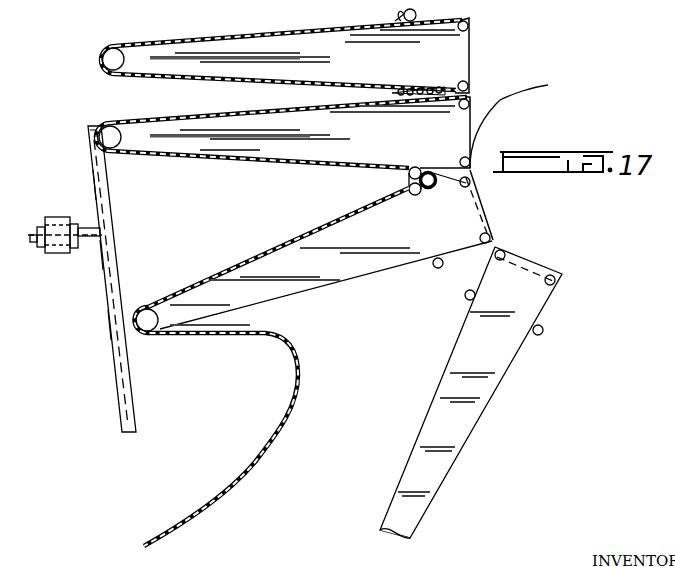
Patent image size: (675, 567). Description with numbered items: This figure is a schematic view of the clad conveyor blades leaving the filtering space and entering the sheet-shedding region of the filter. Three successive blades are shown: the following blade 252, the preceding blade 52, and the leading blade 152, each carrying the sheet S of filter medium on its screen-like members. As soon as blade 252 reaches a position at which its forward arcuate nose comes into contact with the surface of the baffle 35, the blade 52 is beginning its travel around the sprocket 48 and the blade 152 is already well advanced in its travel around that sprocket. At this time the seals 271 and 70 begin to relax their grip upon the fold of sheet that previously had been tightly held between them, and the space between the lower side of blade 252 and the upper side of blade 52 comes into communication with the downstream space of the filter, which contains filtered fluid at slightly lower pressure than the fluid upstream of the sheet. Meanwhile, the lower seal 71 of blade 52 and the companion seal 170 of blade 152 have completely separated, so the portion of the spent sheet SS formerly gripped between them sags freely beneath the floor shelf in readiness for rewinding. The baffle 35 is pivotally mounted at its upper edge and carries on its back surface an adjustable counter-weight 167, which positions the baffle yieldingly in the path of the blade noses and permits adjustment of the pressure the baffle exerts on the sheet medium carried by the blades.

The sheet S is at (188, 37).
The spent sheet SS is at (270, 456).
The following blade 252 is at (262, 155).
The seal 271 is at (414, 167).
The upper seal 70 is at (421, 195).
The lower seal 71 is at (439, 258).
The sprocket 48 is at (535, 86).
The blade 52 is at (360, 268).
The companion seal 170 is at (465, 300).
The leading blade 152 is at (452, 476).
The baffle 35 is at (113, 244).
The adjustable counter-weight 167 is at (60, 255).